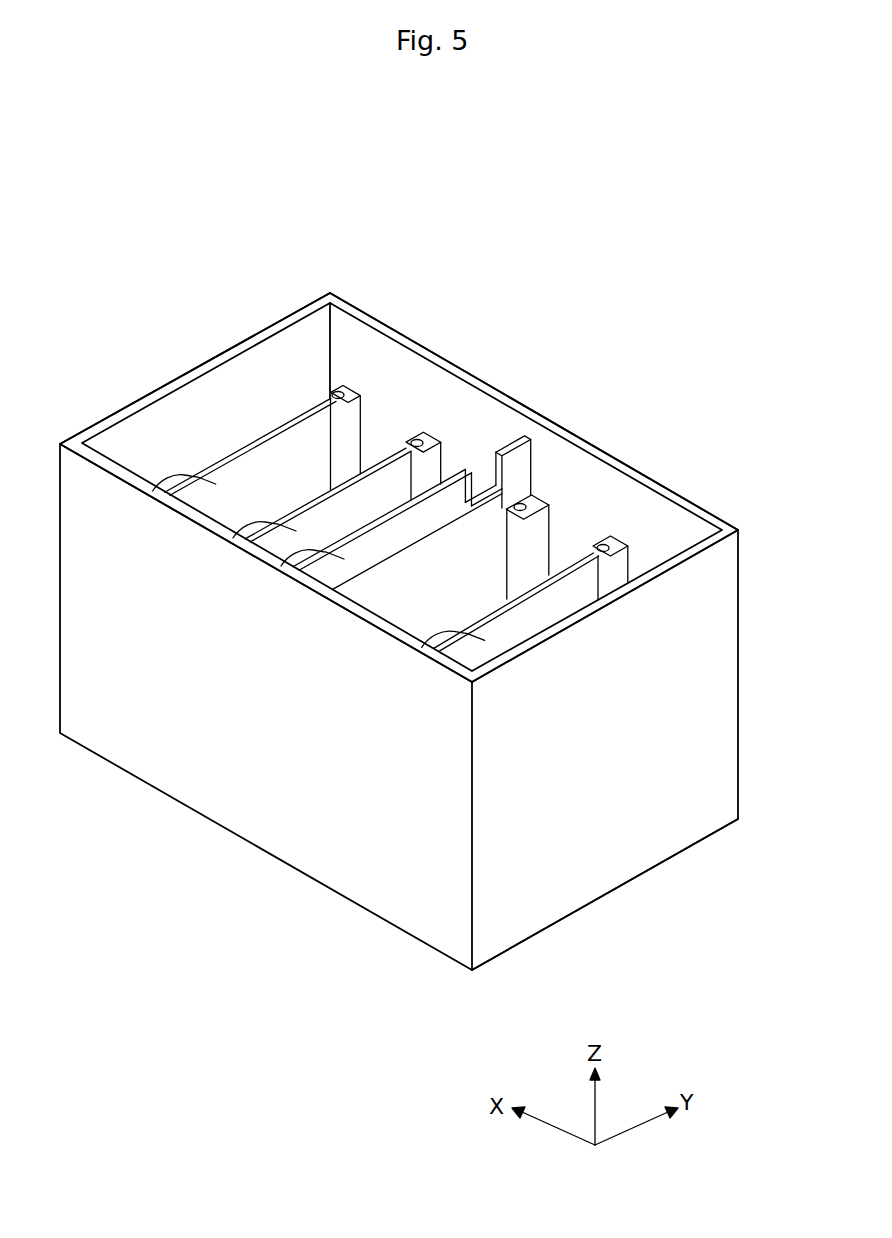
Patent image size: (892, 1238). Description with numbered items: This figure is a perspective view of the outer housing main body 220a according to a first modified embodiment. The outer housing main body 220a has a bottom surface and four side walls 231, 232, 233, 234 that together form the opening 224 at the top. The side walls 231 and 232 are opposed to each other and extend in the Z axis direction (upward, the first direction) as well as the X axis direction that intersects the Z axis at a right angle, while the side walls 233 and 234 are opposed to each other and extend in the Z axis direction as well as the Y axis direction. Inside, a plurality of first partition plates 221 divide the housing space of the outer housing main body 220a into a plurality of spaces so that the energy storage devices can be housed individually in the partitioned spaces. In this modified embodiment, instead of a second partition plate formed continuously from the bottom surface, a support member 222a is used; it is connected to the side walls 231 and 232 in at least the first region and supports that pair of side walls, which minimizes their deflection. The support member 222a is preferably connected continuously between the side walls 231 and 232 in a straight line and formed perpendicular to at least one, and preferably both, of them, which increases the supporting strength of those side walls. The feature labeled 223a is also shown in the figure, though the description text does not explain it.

The outer housing main body 220a is at (735, 579).
The first partition plate 221 is at (148, 492).
The support member 222a is at (277, 562).
The notch 223a is at (495, 456).
The opening 224 is at (640, 493).
The side wall 231 is at (550, 446).
The side wall 232 is at (243, 766).
The side wall 233 is at (168, 413).
The side wall 234 is at (598, 850).